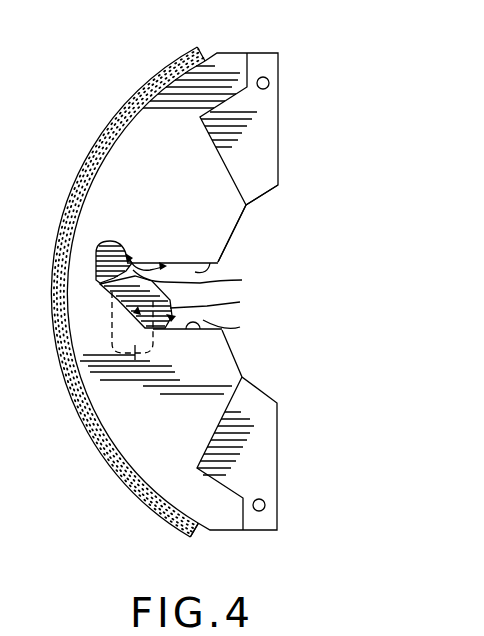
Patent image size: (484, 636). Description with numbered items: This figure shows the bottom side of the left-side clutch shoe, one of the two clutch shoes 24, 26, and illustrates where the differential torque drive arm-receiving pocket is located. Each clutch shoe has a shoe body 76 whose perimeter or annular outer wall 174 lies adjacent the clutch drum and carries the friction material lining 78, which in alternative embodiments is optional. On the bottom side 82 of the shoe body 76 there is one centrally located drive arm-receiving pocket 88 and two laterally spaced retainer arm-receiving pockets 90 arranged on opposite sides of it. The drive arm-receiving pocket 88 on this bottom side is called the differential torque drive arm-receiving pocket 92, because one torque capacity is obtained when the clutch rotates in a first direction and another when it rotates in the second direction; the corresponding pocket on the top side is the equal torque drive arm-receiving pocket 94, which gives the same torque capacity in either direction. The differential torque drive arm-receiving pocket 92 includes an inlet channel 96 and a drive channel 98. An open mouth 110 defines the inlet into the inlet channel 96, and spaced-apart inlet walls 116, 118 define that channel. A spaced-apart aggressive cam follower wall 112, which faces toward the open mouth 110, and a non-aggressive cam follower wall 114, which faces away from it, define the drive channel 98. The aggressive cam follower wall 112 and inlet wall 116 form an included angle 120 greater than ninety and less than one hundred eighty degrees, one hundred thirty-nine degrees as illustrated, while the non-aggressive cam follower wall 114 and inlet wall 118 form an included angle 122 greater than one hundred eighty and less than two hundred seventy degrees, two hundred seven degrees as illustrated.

The clutch shoe 24 is at (88, 80).
The clutch shoe 26 is at (95, 103).
The shoe body 76 is at (173, 105).
The friction material lining 78 is at (66, 212).
The bottom side 82 is at (133, 163).
The drive arm-receiving pocket 88 is at (186, 262).
The retainer arm-receiving pockets 90 is at (266, 138).
The differential torque drive arm-receiving pocket 92 is at (158, 263).
The equal torque drive arm-receiving pocket 94 is at (135, 387).
The inlet channel 96 is at (203, 270).
The drive channel 98 is at (98, 290).
The open mouth 110 is at (240, 327).
The aggressive cam follower wall 112 is at (112, 308).
The non-aggressive cam follower wall 114 is at (115, 250).
The inlet wall 116 is at (205, 330).
The inlet wall 118 is at (223, 248).
The included angle 120 is at (240, 302).
The included angle 122 is at (242, 280).
The annular outer wall 174 is at (207, 530).